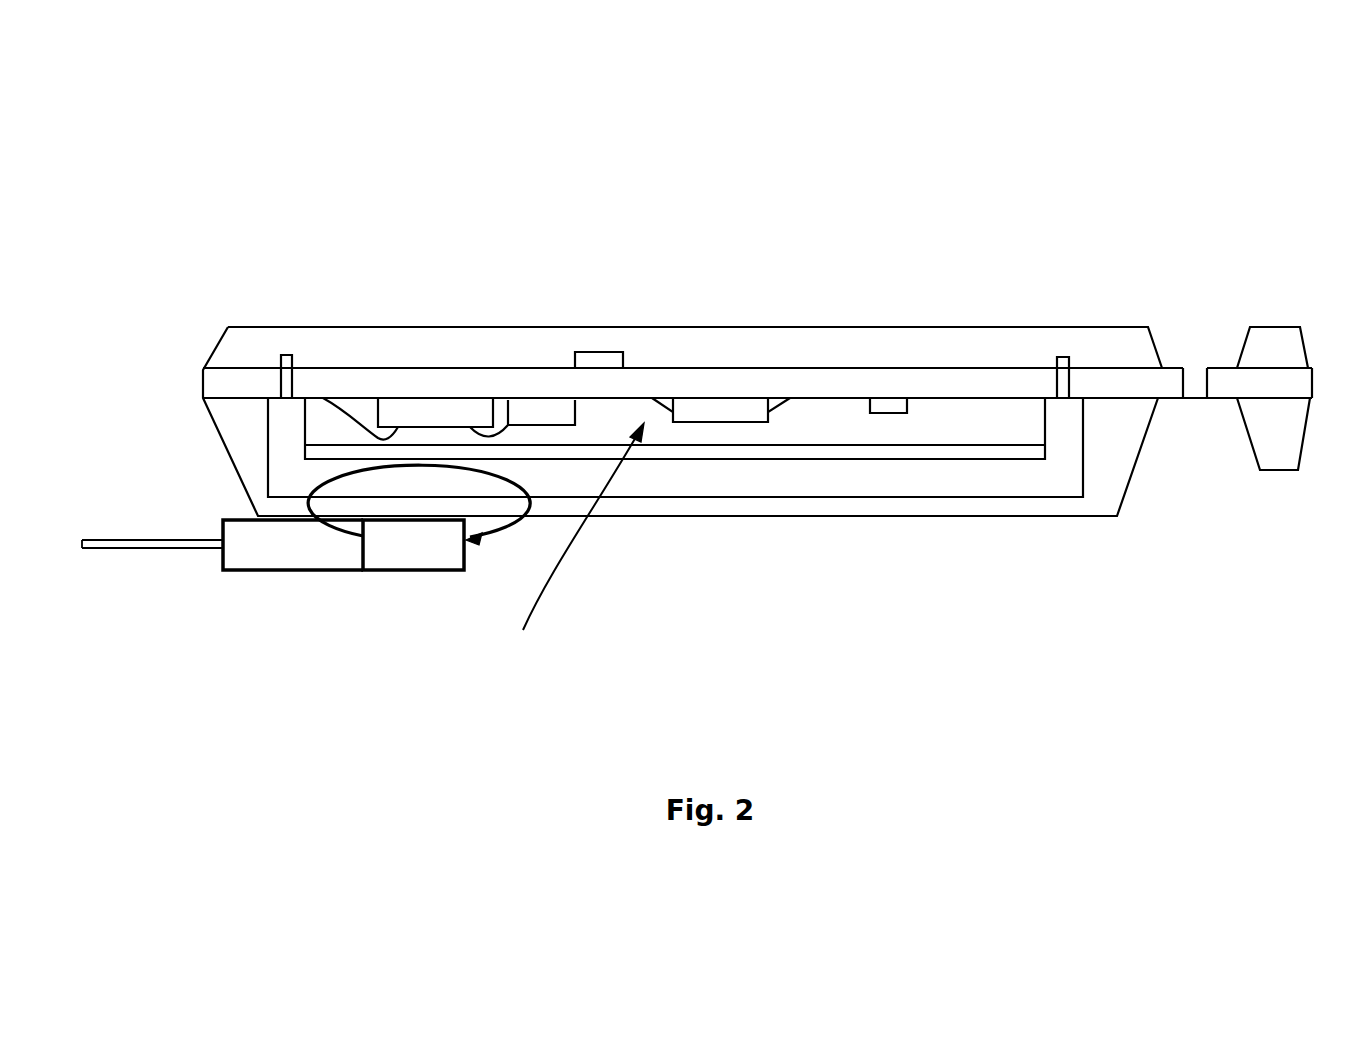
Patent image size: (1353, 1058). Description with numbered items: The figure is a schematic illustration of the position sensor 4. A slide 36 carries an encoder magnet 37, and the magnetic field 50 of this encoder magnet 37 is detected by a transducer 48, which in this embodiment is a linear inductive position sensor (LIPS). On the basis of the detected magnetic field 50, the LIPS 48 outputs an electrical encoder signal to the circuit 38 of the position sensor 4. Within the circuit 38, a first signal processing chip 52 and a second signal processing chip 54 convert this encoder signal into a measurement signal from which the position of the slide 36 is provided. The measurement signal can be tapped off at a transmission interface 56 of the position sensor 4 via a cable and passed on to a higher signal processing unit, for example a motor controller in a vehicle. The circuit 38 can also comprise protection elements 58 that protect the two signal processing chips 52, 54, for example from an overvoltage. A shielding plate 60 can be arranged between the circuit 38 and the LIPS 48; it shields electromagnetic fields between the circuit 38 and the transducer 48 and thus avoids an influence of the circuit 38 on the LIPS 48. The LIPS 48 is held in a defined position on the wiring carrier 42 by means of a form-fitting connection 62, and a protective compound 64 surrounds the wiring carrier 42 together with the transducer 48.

The position sensor 4 is at (233, 198).
The slide 36 is at (288, 545).
The encoder magnet 37 is at (425, 548).
The circuit 38 is at (573, 543).
The wiring carrier 42 is at (452, 388).
The transducer 48 is at (758, 482).
The magnetic field 50 is at (503, 533).
The first signal processing chip 52 is at (418, 408).
The second signal processing chip 54 is at (538, 410).
The transmission interface 56 is at (1197, 378).
The protection elements 58 is at (598, 352).
The shielding plate 60 is at (825, 452).
The form-fitting connection 62 is at (290, 355).
The protective compound 64 is at (975, 415).